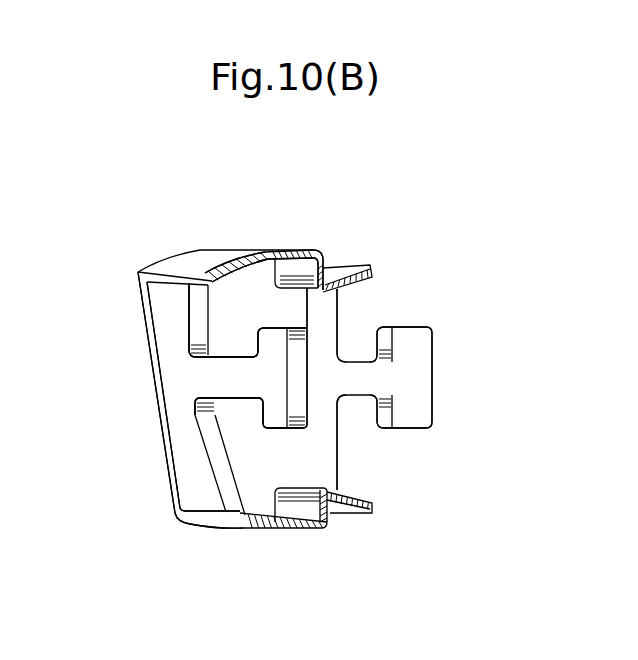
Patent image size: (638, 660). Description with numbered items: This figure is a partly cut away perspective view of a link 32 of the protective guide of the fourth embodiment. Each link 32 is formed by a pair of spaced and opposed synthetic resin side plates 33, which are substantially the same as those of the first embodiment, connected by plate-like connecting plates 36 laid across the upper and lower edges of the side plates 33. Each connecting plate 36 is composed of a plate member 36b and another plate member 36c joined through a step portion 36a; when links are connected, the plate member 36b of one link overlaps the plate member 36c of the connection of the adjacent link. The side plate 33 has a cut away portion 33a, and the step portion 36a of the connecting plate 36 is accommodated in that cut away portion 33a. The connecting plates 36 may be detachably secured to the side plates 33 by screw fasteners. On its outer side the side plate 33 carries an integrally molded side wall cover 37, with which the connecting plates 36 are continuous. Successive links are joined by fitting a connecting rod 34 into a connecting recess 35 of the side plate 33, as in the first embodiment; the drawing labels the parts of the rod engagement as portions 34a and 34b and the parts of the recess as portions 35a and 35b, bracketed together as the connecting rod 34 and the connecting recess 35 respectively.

The link 32 is at (190, 244).
The side plate 33 is at (327, 305).
The cut away portion 33a is at (296, 522).
The connecting rod 34 is at (492, 476).
The upper stub of engaging portion 34a is at (352, 378).
The lower stub of engaging portion 34b is at (415, 407).
The connecting recess 35 is at (80, 320).
The lower arm 35a is at (228, 375).
The upper arm 35b is at (272, 342).
The connecting plate 36 is at (309, 246).
The step portion 36a is at (326, 260).
The plate member 36b is at (247, 258).
The plate member 36c is at (354, 267).
The side wall cover 37 is at (168, 488).